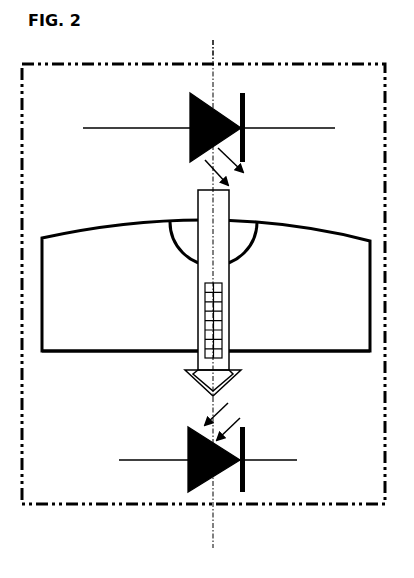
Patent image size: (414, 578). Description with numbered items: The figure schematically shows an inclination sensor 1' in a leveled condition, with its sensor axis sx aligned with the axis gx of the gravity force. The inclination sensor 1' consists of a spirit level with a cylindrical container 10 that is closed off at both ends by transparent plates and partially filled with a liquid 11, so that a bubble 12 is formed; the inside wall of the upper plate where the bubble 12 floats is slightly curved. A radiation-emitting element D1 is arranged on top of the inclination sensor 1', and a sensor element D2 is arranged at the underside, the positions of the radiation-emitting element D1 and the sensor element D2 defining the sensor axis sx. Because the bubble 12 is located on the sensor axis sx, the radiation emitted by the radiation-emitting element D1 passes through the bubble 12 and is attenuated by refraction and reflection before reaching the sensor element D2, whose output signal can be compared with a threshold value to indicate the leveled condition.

The inclination sensor 1' is at (203, 284).
The cylindrical container 10 is at (90, 228).
The liquid 11 is at (136, 258).
The bubble 12 is at (178, 233).
The radiation-emitting element D1 is at (209, 131).
The sensor element D2 is at (208, 447).
The axis of the gravity force gx is at (199, 288).
The sensor axis sx is at (225, 44).